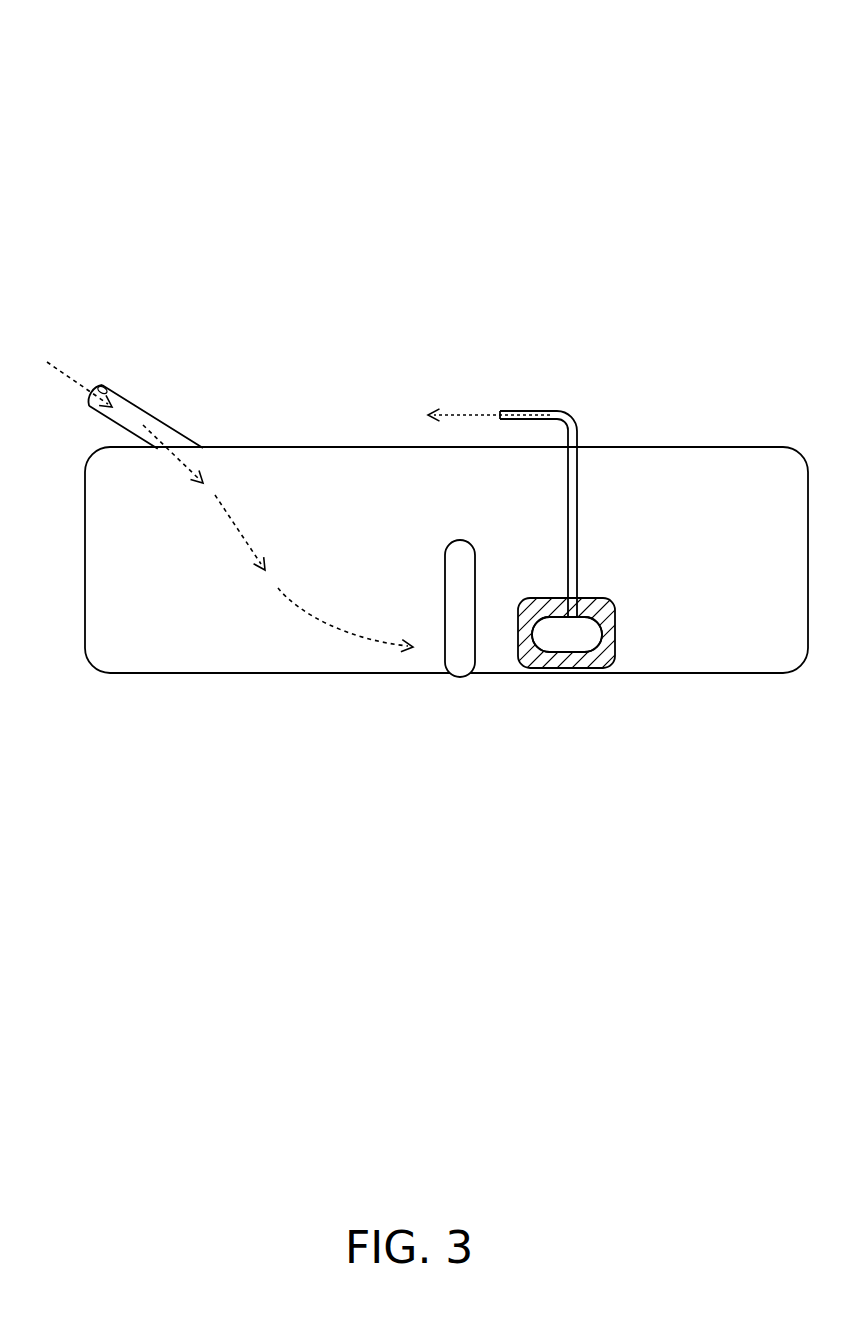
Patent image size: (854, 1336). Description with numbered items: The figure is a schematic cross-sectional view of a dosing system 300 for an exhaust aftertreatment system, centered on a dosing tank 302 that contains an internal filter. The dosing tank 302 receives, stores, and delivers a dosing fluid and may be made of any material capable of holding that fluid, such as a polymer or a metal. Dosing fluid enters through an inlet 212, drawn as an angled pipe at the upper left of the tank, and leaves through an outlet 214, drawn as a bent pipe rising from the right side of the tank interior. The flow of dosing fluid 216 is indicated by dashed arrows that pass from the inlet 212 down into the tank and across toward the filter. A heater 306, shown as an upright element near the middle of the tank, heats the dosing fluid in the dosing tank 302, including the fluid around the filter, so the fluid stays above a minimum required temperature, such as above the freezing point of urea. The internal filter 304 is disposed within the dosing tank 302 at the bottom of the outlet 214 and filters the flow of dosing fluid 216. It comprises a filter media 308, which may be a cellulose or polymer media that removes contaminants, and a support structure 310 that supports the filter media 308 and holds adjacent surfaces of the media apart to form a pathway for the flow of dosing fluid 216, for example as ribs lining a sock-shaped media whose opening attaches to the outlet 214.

The dosing system 300 is at (90, 95).
The dosing tank 302 is at (425, 509).
The inlet 212 is at (133, 415).
The outlet 214 is at (527, 410).
The flow of dosing fluid 216 is at (335, 623).
The internal filter 304 is at (629, 592).
The heater 306 is at (455, 678).
The filter media 308 is at (603, 631).
The support structure 310 is at (567, 634).